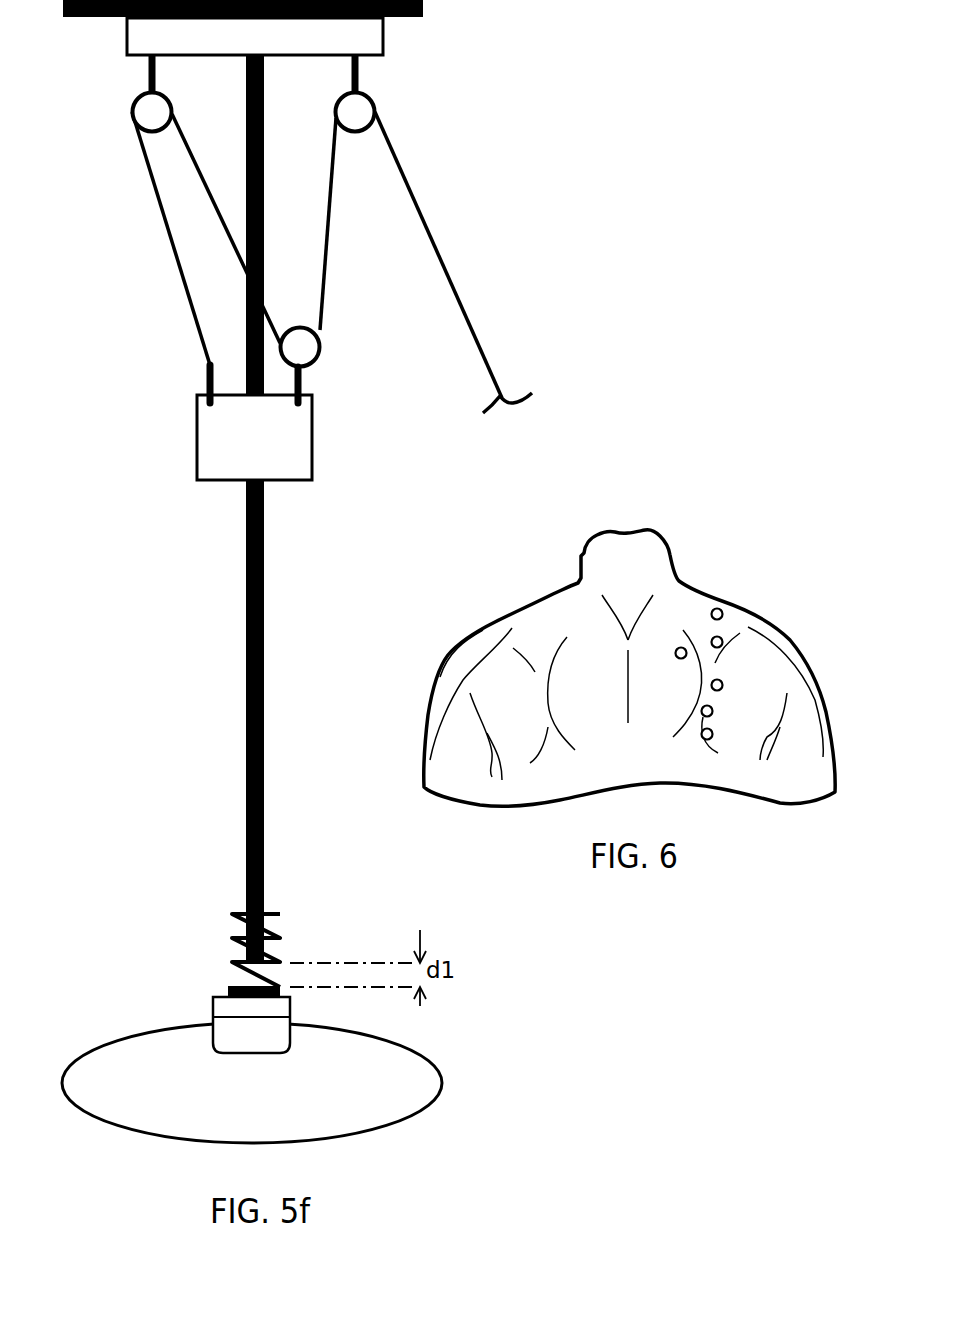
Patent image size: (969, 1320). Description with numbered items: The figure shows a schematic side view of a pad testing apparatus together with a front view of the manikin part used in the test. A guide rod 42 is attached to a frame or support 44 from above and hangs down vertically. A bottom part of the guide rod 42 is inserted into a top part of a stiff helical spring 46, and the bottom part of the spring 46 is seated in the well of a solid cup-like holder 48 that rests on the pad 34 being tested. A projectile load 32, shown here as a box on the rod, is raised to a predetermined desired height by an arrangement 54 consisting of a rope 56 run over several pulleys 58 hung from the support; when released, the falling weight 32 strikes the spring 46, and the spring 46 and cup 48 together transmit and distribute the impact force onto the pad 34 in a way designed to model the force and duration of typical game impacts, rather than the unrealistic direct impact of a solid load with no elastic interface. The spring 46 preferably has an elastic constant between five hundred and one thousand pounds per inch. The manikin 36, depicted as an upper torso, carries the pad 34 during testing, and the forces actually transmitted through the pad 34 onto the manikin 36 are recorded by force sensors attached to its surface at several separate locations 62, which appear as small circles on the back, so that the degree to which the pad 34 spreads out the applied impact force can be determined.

In FIG. 5F, the projectile load 32 is at (303, 442).
In FIG. 5F, the pad 34 is at (268, 1101).
In FIG. 6, the manikin 36 is at (642, 761).
In FIG. 5F, the guide rod 42 is at (250, 77).
In FIG. 5F, the frame 44 is at (384, 43).
In FIG. 5F, the helical spring 46 is at (237, 945).
In FIG. 5F, the cup-like holder 48 is at (235, 1032).
In FIG. 5F, the arrangement of rope and pulleys 54 is at (152, 242).
In FIG. 5F, the rope 56 is at (425, 213).
In FIG. 5F, the pulleys 58 is at (370, 96).
In FIG. 6, the locations 62 is at (723, 642).